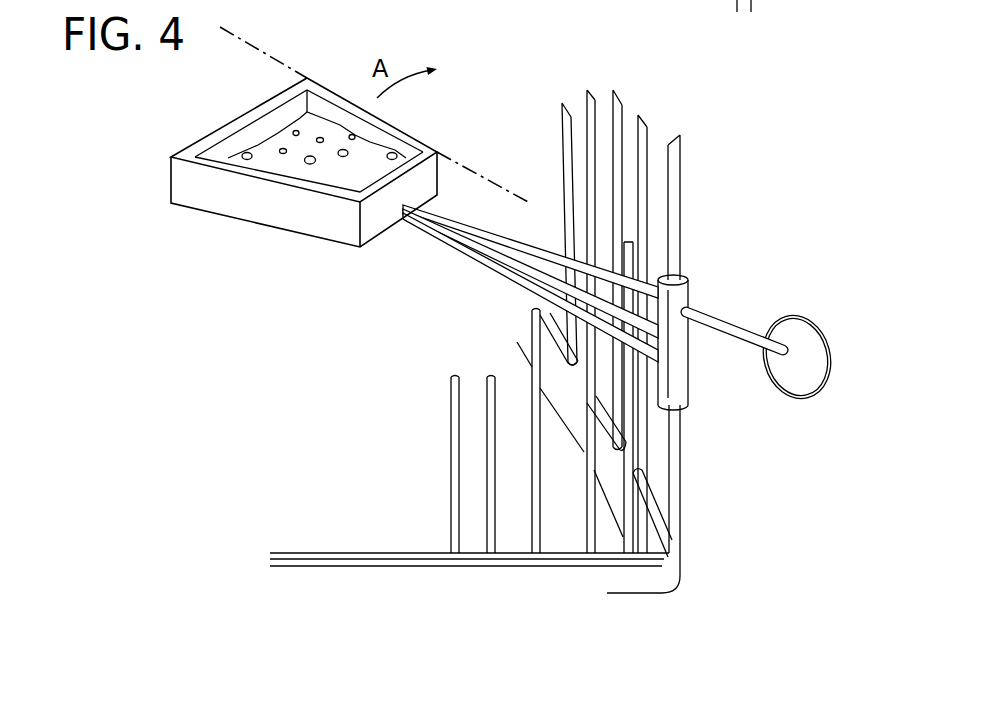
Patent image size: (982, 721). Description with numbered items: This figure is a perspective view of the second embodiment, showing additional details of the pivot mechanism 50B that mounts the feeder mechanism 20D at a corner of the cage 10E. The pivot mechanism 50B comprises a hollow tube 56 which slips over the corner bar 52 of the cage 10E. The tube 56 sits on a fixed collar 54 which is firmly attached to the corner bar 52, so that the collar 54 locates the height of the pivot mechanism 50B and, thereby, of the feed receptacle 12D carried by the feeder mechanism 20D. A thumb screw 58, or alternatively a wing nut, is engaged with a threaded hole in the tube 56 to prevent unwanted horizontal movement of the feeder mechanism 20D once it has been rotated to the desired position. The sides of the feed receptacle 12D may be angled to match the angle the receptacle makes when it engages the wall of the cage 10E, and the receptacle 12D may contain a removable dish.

The cage 10E is at (400, 573).
The feed receptacle 12D is at (300, 226).
The feeder mechanism 20D is at (343, 220).
The pivot mechanism 50B is at (723, 364).
The corner bar 52 is at (682, 153).
The fixed collar 54 is at (678, 410).
The hollow tube 56 is at (690, 292).
The thumb screw 58 is at (808, 322).